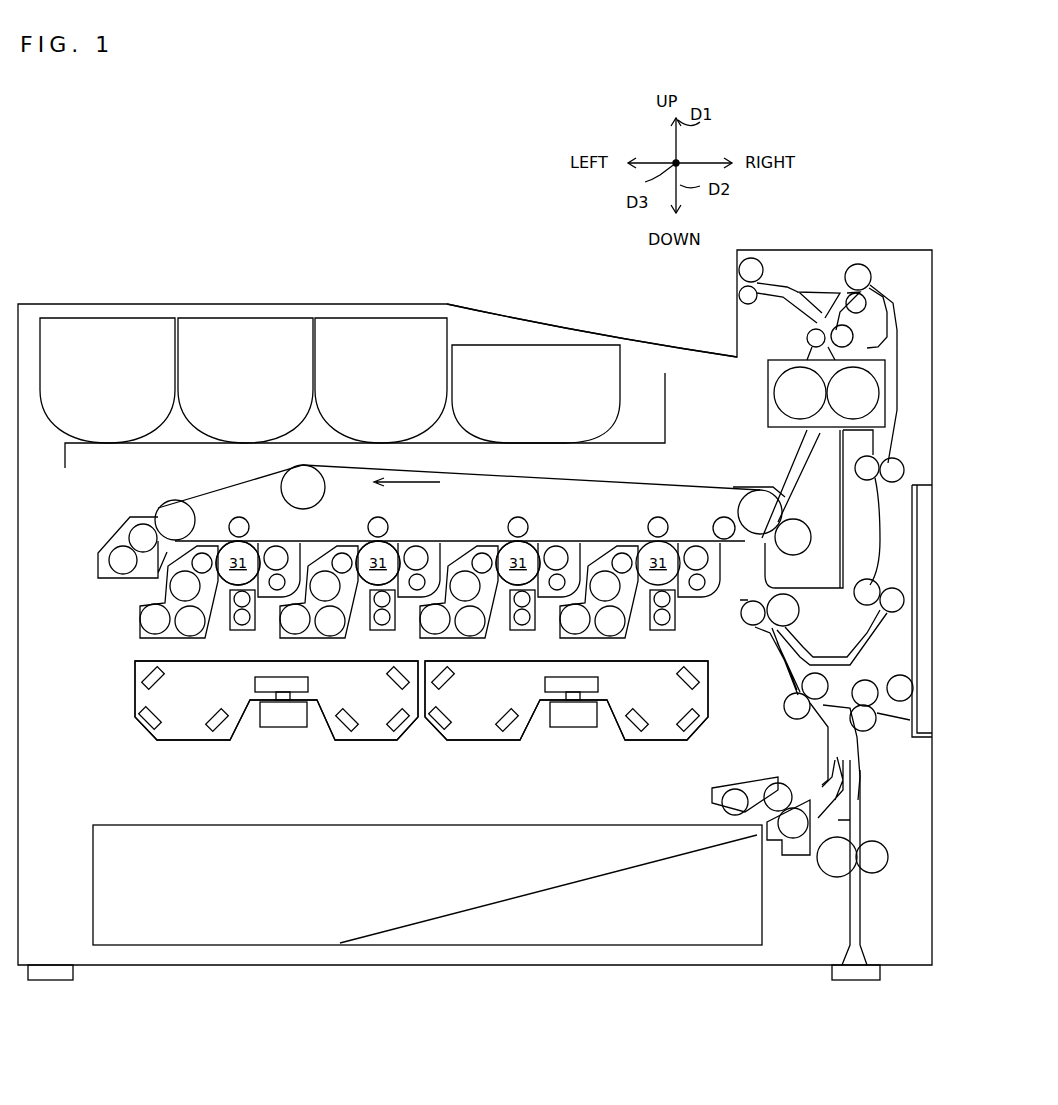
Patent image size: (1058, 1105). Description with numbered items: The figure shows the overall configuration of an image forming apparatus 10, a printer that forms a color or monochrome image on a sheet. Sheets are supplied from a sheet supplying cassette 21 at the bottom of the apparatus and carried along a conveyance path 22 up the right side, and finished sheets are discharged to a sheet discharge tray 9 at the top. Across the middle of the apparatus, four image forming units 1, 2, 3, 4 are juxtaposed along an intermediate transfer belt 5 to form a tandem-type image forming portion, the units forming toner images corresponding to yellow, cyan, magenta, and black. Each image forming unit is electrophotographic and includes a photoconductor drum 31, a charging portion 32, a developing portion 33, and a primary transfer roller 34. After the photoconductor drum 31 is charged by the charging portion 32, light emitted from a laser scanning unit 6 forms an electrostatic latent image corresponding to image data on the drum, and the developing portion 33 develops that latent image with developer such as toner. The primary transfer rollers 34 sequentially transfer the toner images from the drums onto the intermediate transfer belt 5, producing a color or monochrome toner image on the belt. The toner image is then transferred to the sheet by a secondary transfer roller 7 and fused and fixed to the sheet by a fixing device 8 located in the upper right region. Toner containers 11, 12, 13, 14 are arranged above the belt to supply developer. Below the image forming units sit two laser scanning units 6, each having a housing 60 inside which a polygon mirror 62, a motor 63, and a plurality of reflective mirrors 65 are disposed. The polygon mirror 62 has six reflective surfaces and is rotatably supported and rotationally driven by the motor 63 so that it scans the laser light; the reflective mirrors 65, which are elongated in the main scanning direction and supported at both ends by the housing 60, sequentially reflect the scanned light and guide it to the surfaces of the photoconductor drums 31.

The image forming apparatus 10 is at (58, 242).
The toner container 11 is at (147, 318).
The toner container 12 is at (285, 318).
The toner container 13 is at (405, 318).
The toner container 14 is at (578, 345).
The sheet discharge tray 9 is at (640, 336).
The fixing device 8 is at (768, 398).
The intermediate transfer belt 5 is at (197, 500).
The image forming unit 4 is at (690, 528).
The secondary transfer roller 7 is at (803, 556).
The primary transfer roller 34 is at (652, 517).
The photoconductor drum 31 is at (456, 569).
The developing portion 33 is at (562, 636).
The charging portion 32 is at (658, 630).
The image forming unit 1 is at (271, 533).
The image forming unit 2 is at (411, 533).
The image forming unit 3 is at (551, 533).
The laser scanning unit 6 is at (625, 763).
The housing 60 is at (470, 742).
The reflective mirror 65 is at (700, 680).
The polygon mirror 62 is at (598, 685).
The motor 63 is at (568, 728).
The sheet supplying cassette 21 is at (172, 945).
The conveyance path 22 is at (780, 690).